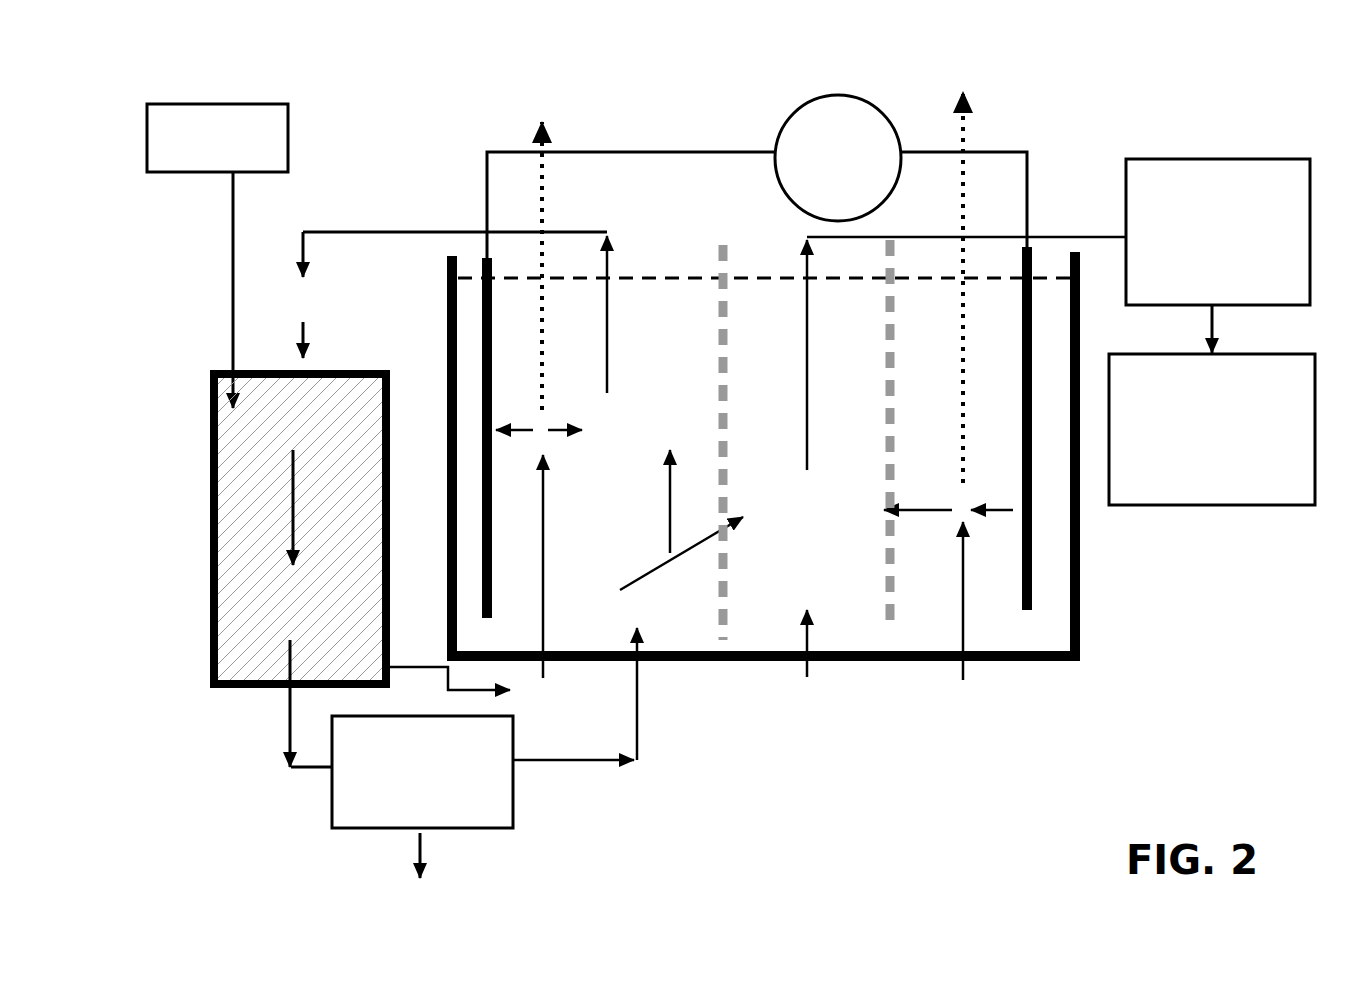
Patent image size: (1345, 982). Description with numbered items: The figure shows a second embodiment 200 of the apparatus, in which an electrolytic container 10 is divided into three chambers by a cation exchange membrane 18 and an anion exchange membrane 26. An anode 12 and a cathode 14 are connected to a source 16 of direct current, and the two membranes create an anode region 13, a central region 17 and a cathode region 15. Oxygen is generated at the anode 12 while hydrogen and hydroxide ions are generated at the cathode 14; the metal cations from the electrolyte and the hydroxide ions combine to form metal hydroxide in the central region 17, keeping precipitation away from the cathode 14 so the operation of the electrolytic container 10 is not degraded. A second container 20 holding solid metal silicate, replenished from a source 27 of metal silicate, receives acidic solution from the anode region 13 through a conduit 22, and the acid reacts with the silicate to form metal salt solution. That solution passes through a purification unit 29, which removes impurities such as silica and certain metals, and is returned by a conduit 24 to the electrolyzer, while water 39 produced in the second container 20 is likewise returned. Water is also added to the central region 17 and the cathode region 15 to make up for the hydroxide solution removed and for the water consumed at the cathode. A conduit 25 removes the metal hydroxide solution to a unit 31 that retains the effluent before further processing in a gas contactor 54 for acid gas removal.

The electrolytic container 10 is at (743, 661).
The anode 12 is at (480, 610).
The anode region 13 is at (612, 376).
The cathode 14 is at (1030, 612).
The cathode region 15 is at (950, 383).
The source of direct current 16 is at (825, 94).
The central region 17 is at (754, 482).
The cation exchange membrane 18 is at (724, 620).
The second container 20 is at (337, 370).
The conduit for supplying acidic solution 22 is at (305, 229).
The conduit for passing aqueous solution 24 is at (576, 762).
The conduit for removing metal hydroxide 25 is at (1040, 237).
The anion exchange membrane 26 is at (892, 606).
The source of solid metal silicate 27 is at (289, 138).
The purification unit 29 is at (332, 788).
The unit for retaining effluent 31 is at (1177, 158).
The water 39 is at (405, 668).
The gas contactor 54 is at (1212, 429).
The second embodiment 200 is at (1108, 746).